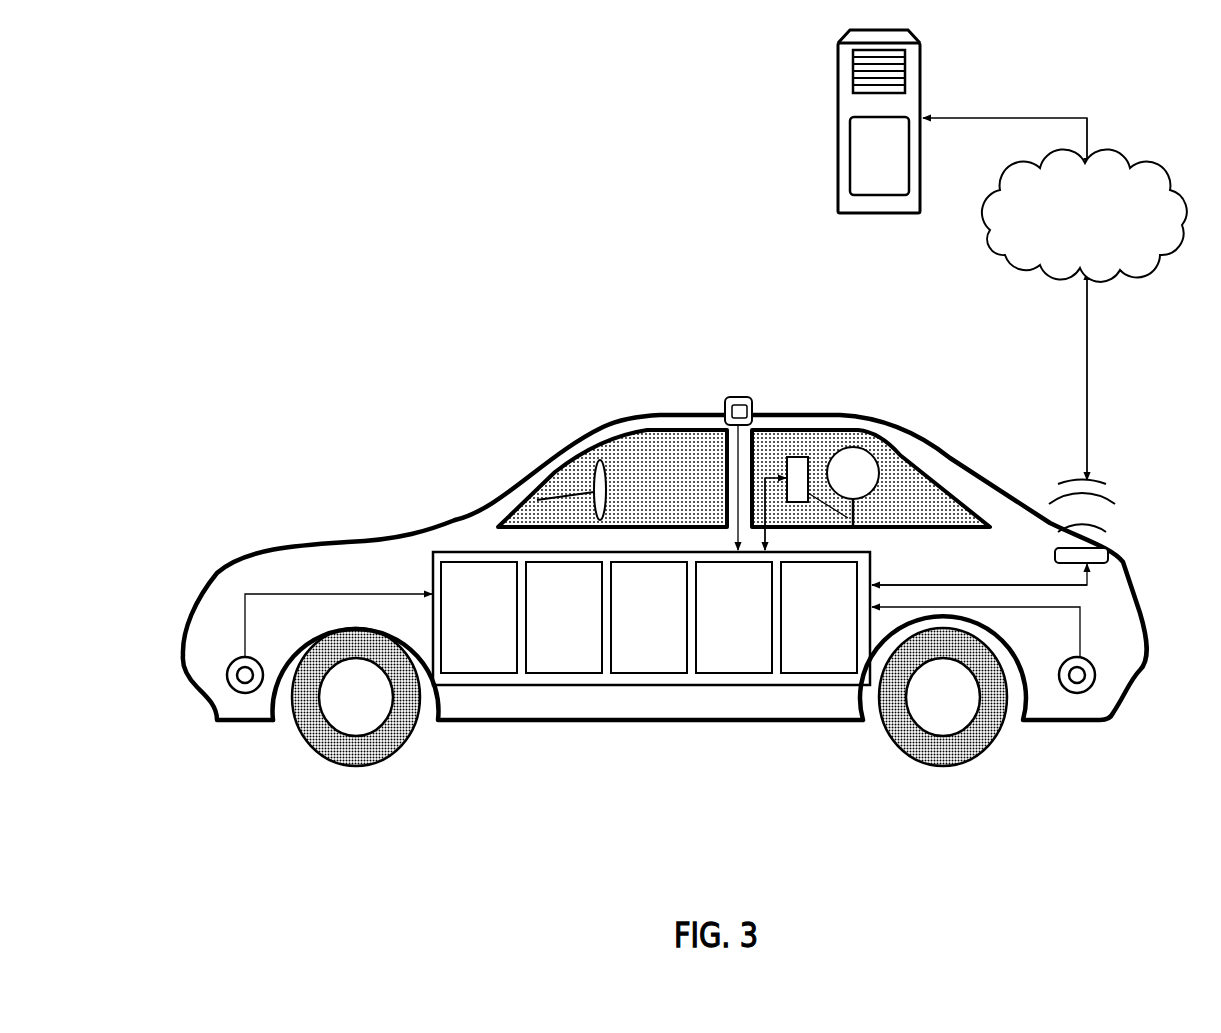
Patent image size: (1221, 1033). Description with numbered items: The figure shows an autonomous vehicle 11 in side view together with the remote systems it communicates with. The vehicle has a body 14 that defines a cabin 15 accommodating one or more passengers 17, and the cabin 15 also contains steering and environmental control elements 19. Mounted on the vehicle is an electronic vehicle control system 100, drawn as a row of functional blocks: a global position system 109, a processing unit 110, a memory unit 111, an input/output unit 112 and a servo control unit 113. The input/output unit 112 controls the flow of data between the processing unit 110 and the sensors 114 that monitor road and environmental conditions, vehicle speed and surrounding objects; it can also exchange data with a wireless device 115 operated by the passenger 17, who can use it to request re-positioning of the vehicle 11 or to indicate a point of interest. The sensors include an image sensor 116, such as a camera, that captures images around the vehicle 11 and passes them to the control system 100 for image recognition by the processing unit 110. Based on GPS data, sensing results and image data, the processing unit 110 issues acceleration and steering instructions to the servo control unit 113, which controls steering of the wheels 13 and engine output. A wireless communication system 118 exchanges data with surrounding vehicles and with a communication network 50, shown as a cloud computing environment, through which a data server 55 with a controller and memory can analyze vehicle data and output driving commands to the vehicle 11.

The autonomous vehicle 11 is at (957, 455).
The wheels 13 is at (387, 742).
The body 14 is at (218, 573).
The cabin 15 is at (689, 521).
The passenger 17 is at (828, 446).
The steering and environmental control elements 19 is at (619, 465).
The communication network 50 is at (1074, 229).
The data server 55 is at (838, 95).
The electronic vehicle control system 100 is at (428, 560).
The global position system (GPS) 109 is at (462, 596).
The processing unit 110 is at (547, 596).
The memory unit 111 is at (632, 596).
The input/output (I/O) unit 112 is at (717, 596).
The servo control unit 113 is at (802, 596).
The sensors 114 is at (243, 691).
The wireless device 115 is at (795, 455).
The image sensor 116 is at (732, 396).
The wireless communication system 118 is at (1054, 555).